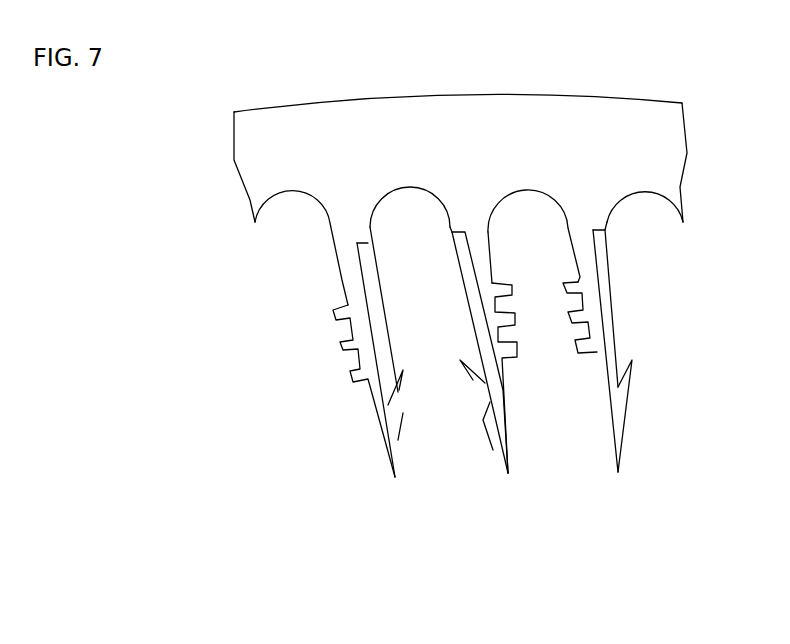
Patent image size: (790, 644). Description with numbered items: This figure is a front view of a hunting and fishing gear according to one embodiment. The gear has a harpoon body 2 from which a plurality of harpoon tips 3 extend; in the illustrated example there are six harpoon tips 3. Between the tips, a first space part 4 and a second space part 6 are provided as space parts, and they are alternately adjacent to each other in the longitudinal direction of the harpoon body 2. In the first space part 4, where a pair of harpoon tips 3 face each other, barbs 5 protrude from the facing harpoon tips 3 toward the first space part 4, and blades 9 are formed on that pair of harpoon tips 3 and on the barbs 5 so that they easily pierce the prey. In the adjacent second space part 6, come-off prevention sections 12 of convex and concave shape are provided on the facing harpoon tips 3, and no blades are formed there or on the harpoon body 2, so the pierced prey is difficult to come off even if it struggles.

The harpoon body 2 is at (612, 138).
The harpoon tip 3 is at (400, 417).
The first space part 4 is at (408, 215).
The barb 5 is at (472, 382).
The second space part 6 is at (528, 207).
The blade 9 is at (388, 407).
The come-off prevention section 12 is at (337, 318).